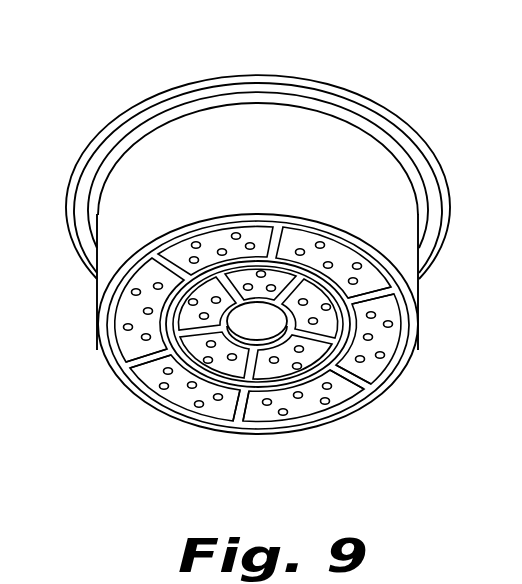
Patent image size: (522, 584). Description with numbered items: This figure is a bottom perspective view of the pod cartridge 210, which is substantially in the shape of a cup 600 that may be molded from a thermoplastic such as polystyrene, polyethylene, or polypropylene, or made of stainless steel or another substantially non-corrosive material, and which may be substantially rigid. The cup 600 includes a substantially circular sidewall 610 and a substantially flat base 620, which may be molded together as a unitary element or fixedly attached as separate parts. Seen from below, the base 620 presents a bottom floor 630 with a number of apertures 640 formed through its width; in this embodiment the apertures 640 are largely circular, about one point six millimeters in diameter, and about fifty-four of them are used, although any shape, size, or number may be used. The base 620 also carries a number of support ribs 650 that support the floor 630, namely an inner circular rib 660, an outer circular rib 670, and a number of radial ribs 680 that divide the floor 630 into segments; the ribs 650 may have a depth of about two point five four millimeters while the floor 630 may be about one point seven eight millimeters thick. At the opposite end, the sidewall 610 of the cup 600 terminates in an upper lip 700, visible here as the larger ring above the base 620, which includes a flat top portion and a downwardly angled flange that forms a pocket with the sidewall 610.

The pod cartridge 210 is at (144, 64).
The upper lip 700 is at (358, 92).
The cup 600 is at (388, 206).
The sidewall 610 is at (403, 260).
The base 620 is at (413, 358).
The bottom floor 630 is at (132, 380).
The apertures 640 is at (190, 388).
The support ribs 650 is at (133, 350).
The inner circular rib 660 is at (310, 380).
The outer circular rib 670 is at (385, 380).
The radial ribs 680 is at (128, 355).